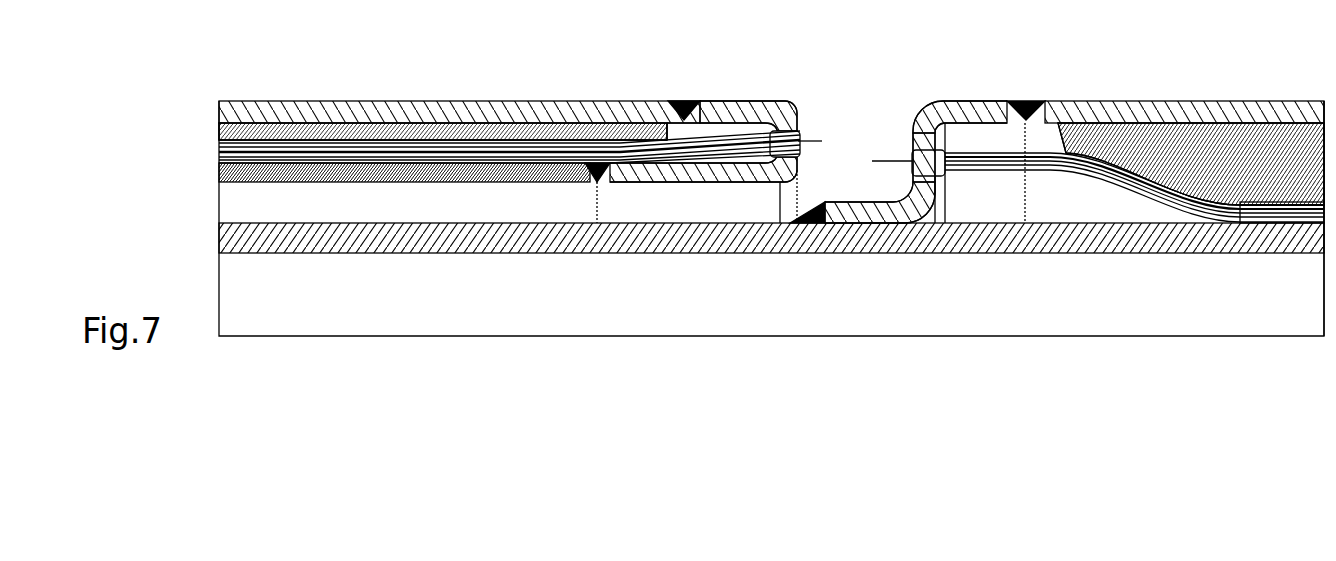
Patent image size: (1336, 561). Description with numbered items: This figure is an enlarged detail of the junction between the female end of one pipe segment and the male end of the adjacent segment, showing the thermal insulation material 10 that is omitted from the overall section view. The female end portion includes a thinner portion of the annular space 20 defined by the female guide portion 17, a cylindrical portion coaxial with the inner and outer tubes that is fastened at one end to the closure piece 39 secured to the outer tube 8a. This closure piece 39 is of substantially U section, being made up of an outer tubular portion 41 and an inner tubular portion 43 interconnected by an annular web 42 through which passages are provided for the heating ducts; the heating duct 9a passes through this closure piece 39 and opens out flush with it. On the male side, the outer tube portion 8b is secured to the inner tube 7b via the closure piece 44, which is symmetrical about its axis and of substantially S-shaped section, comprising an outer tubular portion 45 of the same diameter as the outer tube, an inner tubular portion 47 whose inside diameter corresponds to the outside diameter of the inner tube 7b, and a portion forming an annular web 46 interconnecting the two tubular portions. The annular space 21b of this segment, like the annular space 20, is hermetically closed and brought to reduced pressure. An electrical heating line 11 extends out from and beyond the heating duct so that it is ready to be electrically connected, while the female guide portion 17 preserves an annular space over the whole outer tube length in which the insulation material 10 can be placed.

The inner tube 7b is at (690, 243).
The outer tube 8a is at (295, 112).
The outer tube portion 8b is at (1248, 110).
The heating duct 9a is at (367, 145).
The thermal insulation material 10 is at (423, 132).
The electrical heating line 11 is at (815, 141).
The female guide portion 17 is at (287, 170).
The annular space 20 is at (497, 137).
The annular space 21b is at (1187, 158).
The closure piece 39 is at (757, 103).
The outer tubular portion 41 is at (713, 110).
The annular web 42 is at (797, 167).
The inner tubular portion 43 is at (705, 175).
The closure piece 44 is at (955, 103).
The outer tubular portion 45 is at (985, 110).
The annular web 46 is at (920, 140).
The inner tubular portion 47 is at (860, 212).